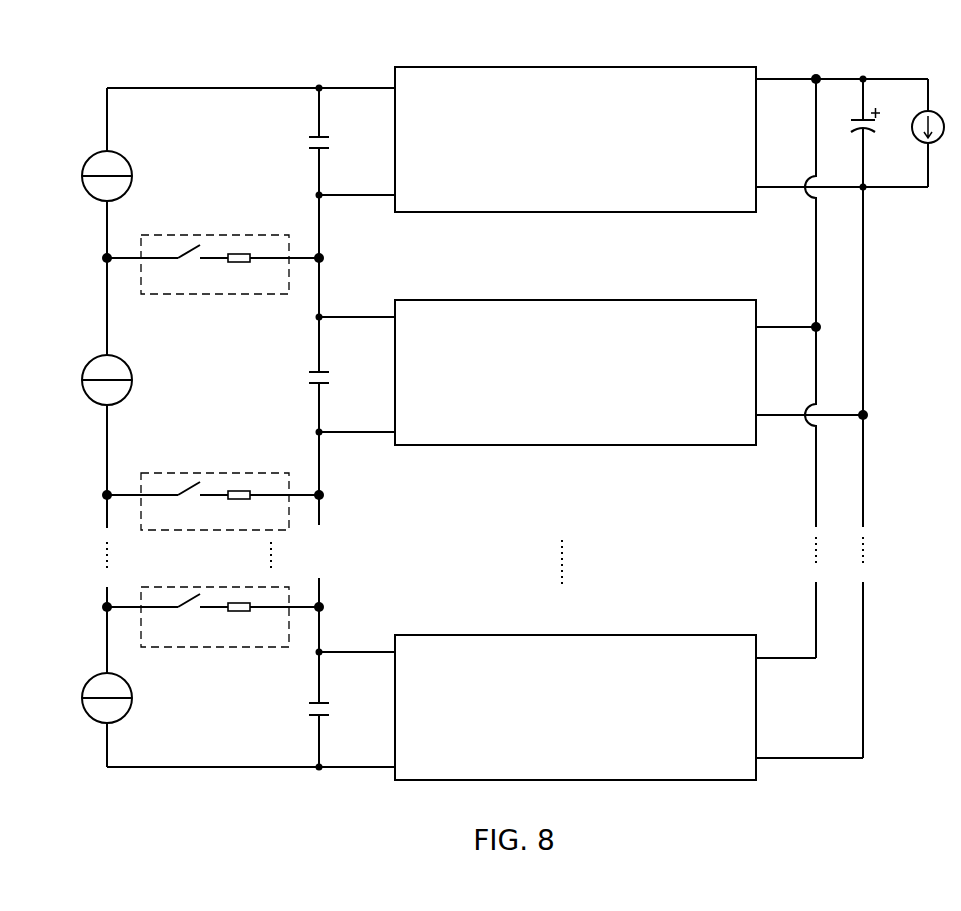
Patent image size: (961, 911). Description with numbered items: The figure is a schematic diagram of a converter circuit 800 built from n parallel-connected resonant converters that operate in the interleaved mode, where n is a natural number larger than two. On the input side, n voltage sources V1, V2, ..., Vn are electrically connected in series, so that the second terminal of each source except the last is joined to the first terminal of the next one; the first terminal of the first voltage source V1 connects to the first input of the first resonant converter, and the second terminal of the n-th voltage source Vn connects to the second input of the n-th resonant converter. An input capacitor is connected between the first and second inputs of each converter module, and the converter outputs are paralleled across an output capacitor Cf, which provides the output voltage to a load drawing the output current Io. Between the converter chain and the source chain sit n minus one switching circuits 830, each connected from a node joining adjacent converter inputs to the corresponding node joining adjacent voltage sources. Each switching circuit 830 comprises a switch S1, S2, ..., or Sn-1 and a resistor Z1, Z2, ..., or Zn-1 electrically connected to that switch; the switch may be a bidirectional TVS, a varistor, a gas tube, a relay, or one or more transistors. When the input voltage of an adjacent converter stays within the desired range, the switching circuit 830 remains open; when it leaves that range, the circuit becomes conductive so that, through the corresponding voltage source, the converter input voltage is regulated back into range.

The converter circuit 800 is at (482, 42).
The switching circuit 830 is at (186, 235).
The first voltage source V1 is at (123, 176).
The second voltage source V2 is at (124, 380).
The n-th voltage source Vn is at (123, 698).
The output capacitor Cf is at (868, 138).
The output current Io is at (927, 142).
The switch of first switching circuit S1 is at (187, 270).
The resistor of first switching circuit Z1 is at (239, 274).
The switch of second switching circuit S2 is at (187, 506).
The resistor of second switching circuit Z2 is at (239, 510).
The switch of (n−1)-th switching circuit Sn-1 is at (180, 619).
The resistor of (n−1)-th switching circuit Zn-1 is at (241, 624).